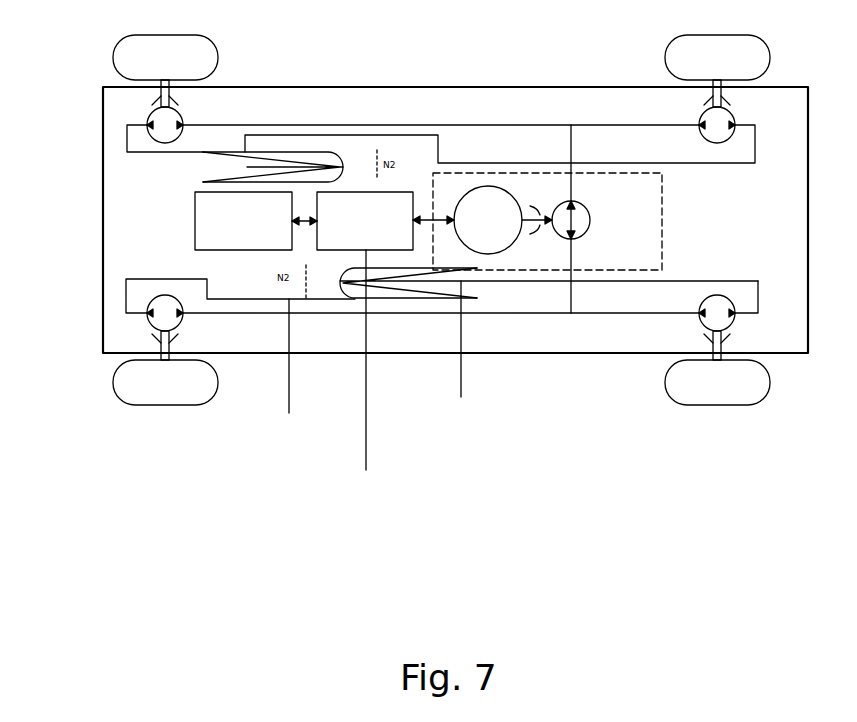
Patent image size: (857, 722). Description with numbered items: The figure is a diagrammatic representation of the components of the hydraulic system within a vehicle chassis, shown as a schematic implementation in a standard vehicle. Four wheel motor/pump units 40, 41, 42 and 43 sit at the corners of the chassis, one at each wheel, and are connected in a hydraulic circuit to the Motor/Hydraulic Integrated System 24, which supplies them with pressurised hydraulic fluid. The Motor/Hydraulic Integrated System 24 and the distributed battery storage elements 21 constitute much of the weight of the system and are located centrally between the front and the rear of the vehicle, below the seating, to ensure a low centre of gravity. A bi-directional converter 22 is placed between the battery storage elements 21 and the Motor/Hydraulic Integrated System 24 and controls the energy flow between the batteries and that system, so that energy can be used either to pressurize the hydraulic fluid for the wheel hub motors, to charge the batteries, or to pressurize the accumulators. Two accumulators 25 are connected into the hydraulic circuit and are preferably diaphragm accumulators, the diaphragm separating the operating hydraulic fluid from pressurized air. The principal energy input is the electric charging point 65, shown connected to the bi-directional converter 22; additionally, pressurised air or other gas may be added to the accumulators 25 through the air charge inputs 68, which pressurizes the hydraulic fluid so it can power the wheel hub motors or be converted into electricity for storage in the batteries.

The distributed battery storage elements 21 is at (243, 221).
The bi-directional converter 22 is at (365, 221).
The Motor/Hydraulic Integrated System 24 is at (547, 219).
The accumulators 25 is at (313, 152).
The wheel motor/pump unit 40 is at (158, 325).
The wheel motor/pump unit 41 is at (150, 120).
The wheel motor/pump unit 42 is at (700, 323).
The wheel motor/pump unit 43 is at (703, 123).
The electric charging point 65 is at (380, 507).
The air charge input 68 is at (302, 432).